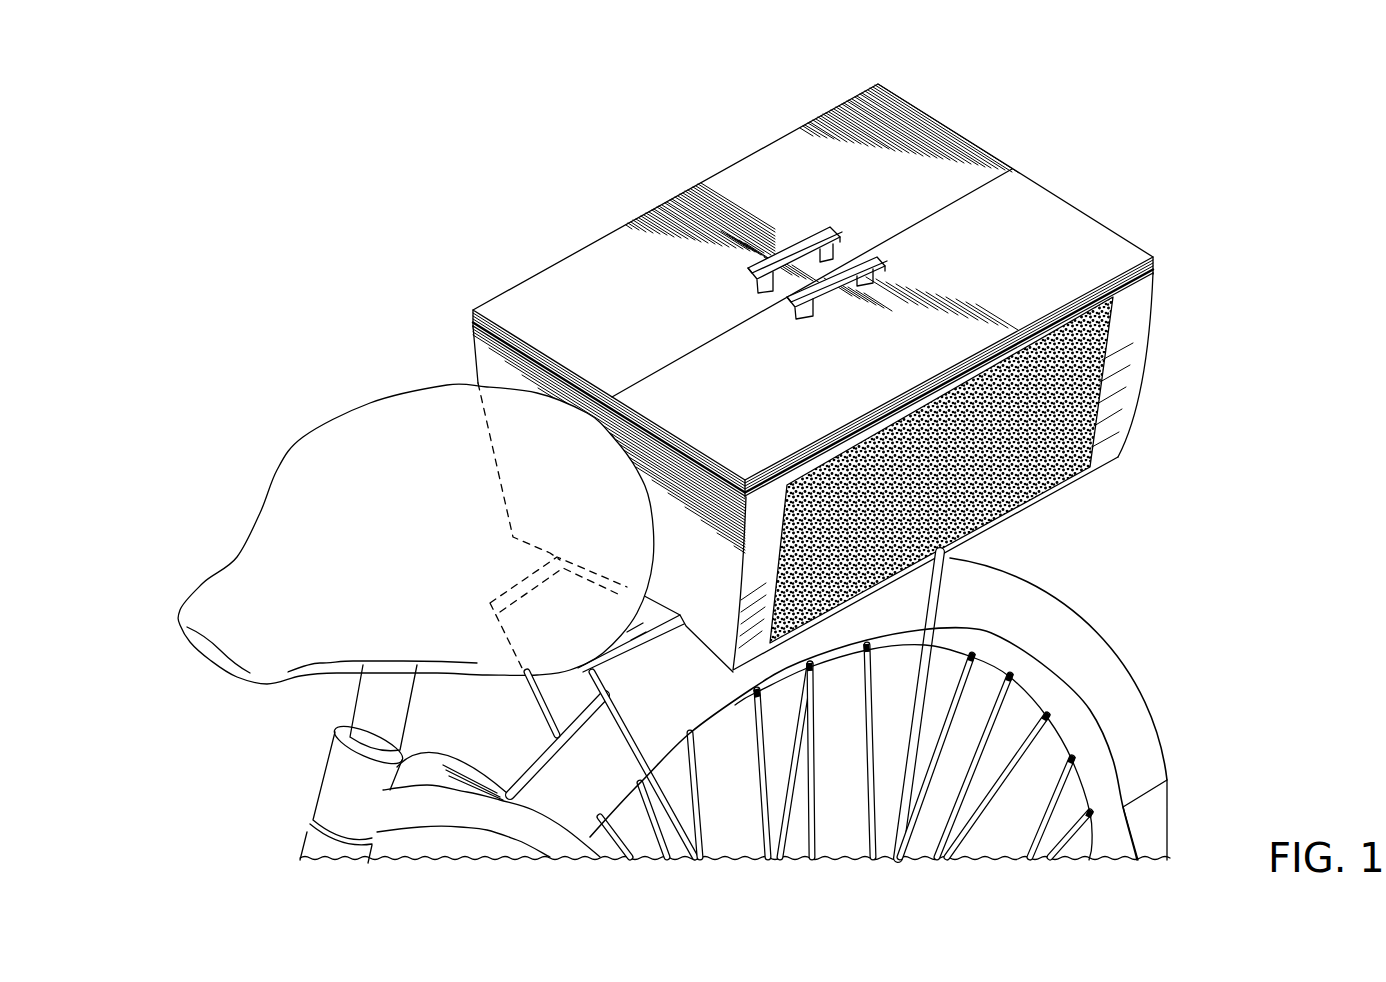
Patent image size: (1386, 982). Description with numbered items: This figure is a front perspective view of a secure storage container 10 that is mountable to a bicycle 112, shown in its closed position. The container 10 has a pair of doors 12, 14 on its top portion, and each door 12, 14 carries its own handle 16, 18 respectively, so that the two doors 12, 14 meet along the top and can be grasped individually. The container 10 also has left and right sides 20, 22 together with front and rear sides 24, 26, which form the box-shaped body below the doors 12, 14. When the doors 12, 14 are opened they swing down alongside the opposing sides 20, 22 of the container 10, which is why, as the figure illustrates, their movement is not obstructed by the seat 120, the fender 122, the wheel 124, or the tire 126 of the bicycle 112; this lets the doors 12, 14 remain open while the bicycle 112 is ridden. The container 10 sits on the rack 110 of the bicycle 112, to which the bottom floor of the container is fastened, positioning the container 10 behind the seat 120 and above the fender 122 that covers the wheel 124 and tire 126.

The storage container 10 is at (432, 100).
The door 12 is at (1127, 252).
The door 14 is at (895, 108).
The handle 16 is at (830, 292).
The handle 18 is at (807, 235).
The left side 20 is at (1072, 488).
The right side 22 is at (610, 212).
The front side 24 is at (477, 360).
The rear side 26 is at (1050, 168).
The rack 110 is at (633, 647).
The bicycle 112 is at (437, 805).
The seat 120 is at (318, 438).
The fender 122 is at (1065, 615).
The wheel 124 is at (1075, 697).
The tire 126 is at (1160, 806).